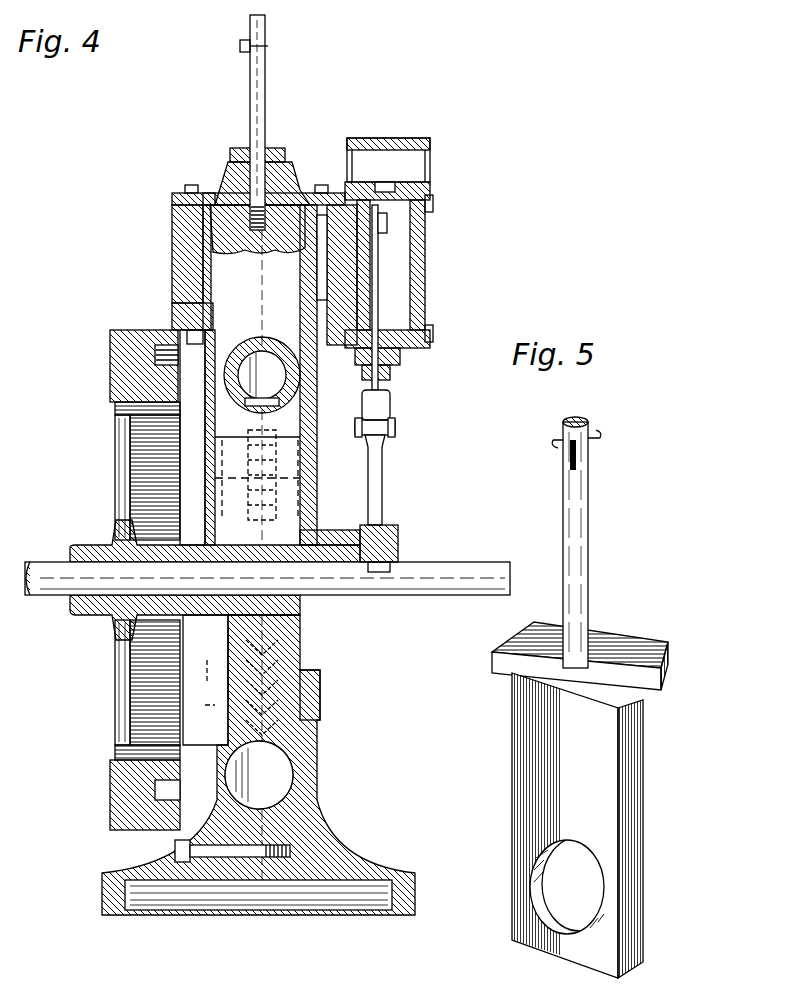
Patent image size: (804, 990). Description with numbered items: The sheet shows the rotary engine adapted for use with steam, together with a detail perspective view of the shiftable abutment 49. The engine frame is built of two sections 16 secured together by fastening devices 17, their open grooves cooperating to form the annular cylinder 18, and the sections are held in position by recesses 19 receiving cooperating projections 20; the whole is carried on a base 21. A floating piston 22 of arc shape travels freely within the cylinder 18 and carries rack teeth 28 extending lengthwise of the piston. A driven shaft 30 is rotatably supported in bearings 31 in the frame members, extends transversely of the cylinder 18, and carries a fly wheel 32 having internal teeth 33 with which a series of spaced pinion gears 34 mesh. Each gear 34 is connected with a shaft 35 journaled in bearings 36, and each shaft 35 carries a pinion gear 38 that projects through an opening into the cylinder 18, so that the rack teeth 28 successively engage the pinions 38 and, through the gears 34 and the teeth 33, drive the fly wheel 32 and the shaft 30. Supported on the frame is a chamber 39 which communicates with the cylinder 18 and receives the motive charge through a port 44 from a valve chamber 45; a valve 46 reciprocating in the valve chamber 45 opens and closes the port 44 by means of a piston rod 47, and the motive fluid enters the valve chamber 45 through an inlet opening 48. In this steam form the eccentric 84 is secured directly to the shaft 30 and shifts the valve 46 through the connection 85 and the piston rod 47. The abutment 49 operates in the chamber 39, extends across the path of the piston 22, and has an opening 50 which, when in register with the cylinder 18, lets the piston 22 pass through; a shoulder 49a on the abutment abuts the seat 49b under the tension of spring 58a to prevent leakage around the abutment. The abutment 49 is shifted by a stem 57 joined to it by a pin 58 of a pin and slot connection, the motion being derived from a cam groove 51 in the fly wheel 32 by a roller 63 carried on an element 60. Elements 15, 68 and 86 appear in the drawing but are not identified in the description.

In FIG. 4, the pedestal column 15 is at (300, 643).
In FIG. 4, the frame section 16 is at (228, 640).
In FIG. 4, the fastening device 17 is at (175, 850).
In FIG. 4, the cylinder 18 is at (285, 778).
In FIG. 4, the recess 19 is at (265, 540).
In FIG. 4, the projection 20 is at (265, 607).
In FIG. 4, the base 21 is at (395, 892).
In FIG. 4, the floating piston 22 is at (262, 353).
In FIG. 4, the rack teeth 28 is at (270, 415).
In FIG. 4, the driven shaft 30 is at (460, 572).
In FIG. 4, the bearing 31 is at (340, 556).
In FIG. 4, the fly wheel 32 is at (130, 795).
In FIG. 4, the internal teeth 33 is at (130, 410).
In FIG. 4, the pinion gear 34 is at (128, 475).
In FIG. 4, the shaft 35 is at (302, 480).
In FIG. 4, the bearing 36 is at (195, 450).
In FIG. 4, the pinion gear 38 is at (270, 430).
In FIG. 4, the chamber 39 is at (185, 243).
In FIG. 4, the port 44 is at (338, 215).
In FIG. 4, the valve chamber 45 is at (400, 258).
In FIG. 4, the valve 46 is at (387, 222).
In FIG. 4, the piston rod 47 is at (380, 400).
In FIG. 4, the opening 48 is at (425, 165).
In FIG. 4, the abutment 49 is at (228, 290).
In FIG. 5, the abutment 49 is at (635, 760).
In FIG. 4, the shoulder 49a is at (215, 198).
In FIG. 5, the shoulder 49a is at (647, 668).
In FIG. 4, the seat 49b is at (195, 300).
In FIG. 5, the opening 50 is at (568, 887).
In FIG. 4, the cam groove 51 is at (160, 790).
In FIG. 4, the stem 57 is at (250, 90).
In FIG. 5, the stem 57 is at (588, 540).
In FIG. 4, the pin 58 is at (240, 46).
In FIG. 5, the pin 58 is at (596, 436).
In FIG. 5, the spring 58a is at (578, 470).
In FIG. 4, the element 60 is at (178, 362).
In FIG. 4, the roller 63 is at (155, 352).
In FIG. 4, the stem boss 68 is at (275, 150).
In FIG. 4, the eccentric 84 is at (398, 546).
In FIG. 4, the connection 85 is at (382, 480).
In FIG. 4, the pivot pin 86 is at (395, 428).